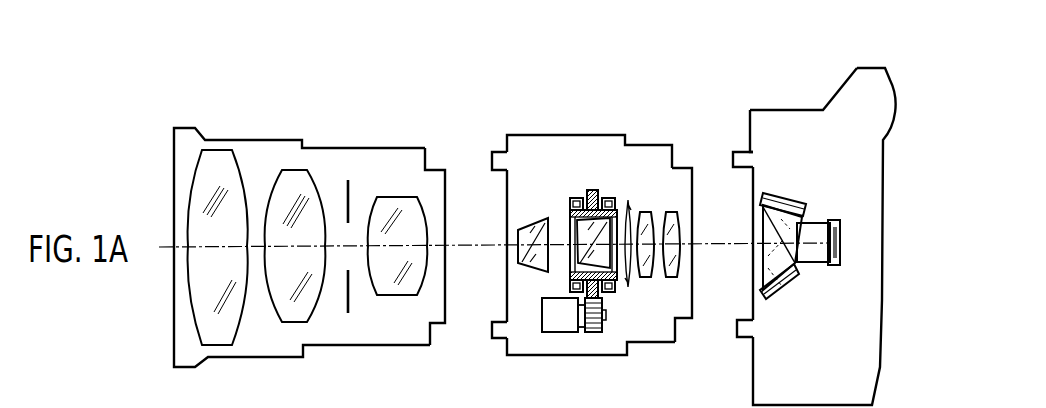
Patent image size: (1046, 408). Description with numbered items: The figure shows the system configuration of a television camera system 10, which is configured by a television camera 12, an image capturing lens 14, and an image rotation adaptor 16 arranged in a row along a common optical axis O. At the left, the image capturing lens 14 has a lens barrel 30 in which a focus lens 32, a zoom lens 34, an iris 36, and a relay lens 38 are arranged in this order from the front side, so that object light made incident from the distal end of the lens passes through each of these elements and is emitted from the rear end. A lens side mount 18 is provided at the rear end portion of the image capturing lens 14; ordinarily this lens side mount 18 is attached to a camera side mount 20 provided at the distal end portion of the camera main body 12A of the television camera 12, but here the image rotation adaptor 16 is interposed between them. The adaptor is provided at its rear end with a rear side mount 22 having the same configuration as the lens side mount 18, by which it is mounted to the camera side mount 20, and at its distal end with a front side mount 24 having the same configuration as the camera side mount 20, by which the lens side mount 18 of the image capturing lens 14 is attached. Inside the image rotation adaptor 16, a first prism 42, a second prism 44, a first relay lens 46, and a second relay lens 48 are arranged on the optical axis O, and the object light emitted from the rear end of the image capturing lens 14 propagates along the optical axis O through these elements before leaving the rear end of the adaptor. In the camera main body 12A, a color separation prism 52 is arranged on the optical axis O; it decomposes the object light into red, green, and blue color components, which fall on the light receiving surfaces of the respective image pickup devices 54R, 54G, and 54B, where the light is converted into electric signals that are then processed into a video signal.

The television camera system 10 is at (697, 43).
The television camera 12 is at (870, 80).
The camera main body 12A is at (797, 117).
The image capturing lens 14 is at (270, 143).
The image rotation adaptor 16 is at (587, 142).
The lens side mount 18 is at (440, 177).
The camera side mount 20 is at (740, 152).
The rear side mount 22 is at (682, 175).
The front side mount 24 is at (498, 162).
The lens barrel 30 is at (363, 152).
The focus lens 32 is at (220, 342).
The zoom lens 34 is at (297, 317).
The iris 36 is at (345, 307).
The relay lens 38 is at (397, 288).
The first prism 42 is at (527, 265).
The second prism 44 is at (572, 213).
The first relay lens 46 is at (648, 277).
The second relay lens 48 is at (675, 283).
The color separation prism 52 is at (807, 230).
The image pickup device 54R is at (780, 193).
The image pickup device 54G is at (833, 267).
The image pickup device 54B is at (780, 302).
The optical axis O is at (470, 243).